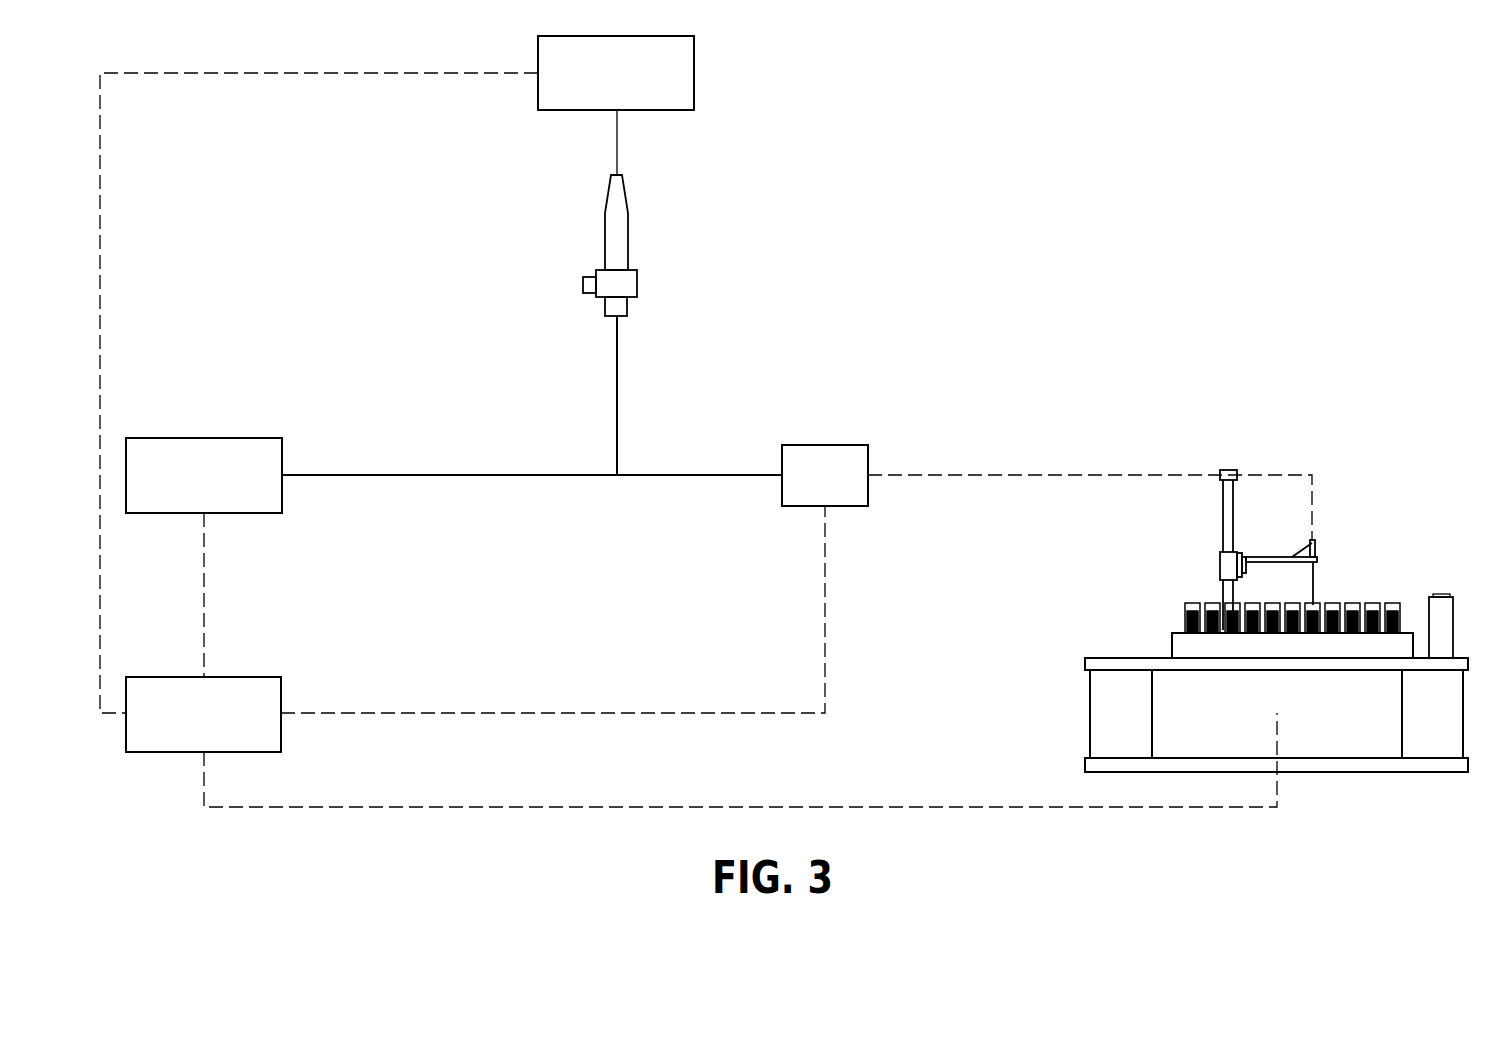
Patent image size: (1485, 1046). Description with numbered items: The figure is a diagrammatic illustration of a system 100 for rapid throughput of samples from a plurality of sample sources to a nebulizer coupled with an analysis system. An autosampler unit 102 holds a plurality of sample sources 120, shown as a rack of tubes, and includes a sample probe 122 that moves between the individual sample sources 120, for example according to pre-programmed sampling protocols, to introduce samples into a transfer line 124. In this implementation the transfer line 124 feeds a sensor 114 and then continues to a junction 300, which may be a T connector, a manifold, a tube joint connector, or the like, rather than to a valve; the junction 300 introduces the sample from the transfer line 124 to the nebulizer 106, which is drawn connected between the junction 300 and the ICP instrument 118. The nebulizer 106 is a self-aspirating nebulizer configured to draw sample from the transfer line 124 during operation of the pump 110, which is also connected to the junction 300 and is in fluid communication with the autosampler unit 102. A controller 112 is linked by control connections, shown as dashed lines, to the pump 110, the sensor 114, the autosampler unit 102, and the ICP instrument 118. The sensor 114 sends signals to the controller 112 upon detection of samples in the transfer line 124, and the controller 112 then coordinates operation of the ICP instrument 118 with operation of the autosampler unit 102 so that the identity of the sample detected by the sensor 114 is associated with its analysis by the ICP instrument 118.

The system 100 is at (1173, 180).
The autosampler unit 102 is at (1365, 497).
The nebulizer 106 is at (630, 242).
The pump 110 is at (203, 438).
The controller 112 is at (167, 752).
The sensor 114 is at (825, 445).
The ICP instrument 118 is at (697, 73).
The plurality of sample sources 120 is at (1333, 603).
The sample probe 122 is at (1317, 573).
The transfer line 124 is at (1075, 473).
The junction 300 is at (615, 475).